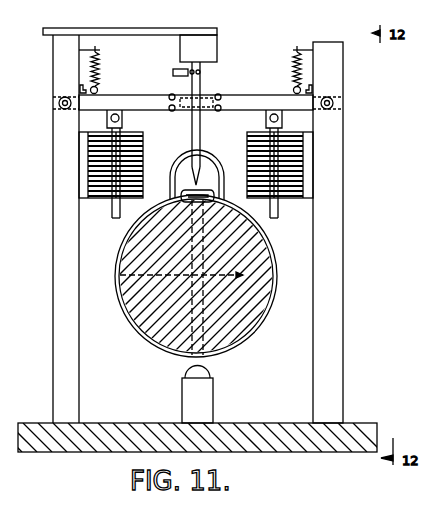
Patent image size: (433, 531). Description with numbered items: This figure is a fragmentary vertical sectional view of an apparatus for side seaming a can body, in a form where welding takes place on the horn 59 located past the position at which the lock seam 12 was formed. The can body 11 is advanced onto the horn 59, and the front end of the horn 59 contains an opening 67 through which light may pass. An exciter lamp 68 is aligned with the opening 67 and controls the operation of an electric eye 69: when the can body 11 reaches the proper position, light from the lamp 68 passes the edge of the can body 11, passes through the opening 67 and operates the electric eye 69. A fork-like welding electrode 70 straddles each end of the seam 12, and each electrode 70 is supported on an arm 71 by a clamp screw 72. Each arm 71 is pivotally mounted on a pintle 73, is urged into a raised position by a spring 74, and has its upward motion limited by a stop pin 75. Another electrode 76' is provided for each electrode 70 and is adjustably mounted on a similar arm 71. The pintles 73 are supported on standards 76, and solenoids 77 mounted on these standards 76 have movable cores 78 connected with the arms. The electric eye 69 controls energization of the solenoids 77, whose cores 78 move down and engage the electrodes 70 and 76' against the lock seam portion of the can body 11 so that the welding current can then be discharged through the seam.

The can body 11 is at (213, 283).
The lock seam 12 is at (208, 190).
The horn 59 is at (233, 338).
The opening 67 is at (205, 303).
The exciter lamp 68 is at (185, 372).
The electric eye 69 is at (209, 50).
The fork-like welding electrode 70 is at (179, 156).
The arm 71 is at (138, 95).
The clamp screw 72 is at (219, 95).
The pintle 73 is at (58, 109).
The spring 74 is at (100, 64).
The stop pin 75 is at (81, 80).
The standard 76 is at (192, 229).
The electrode 76' is at (212, 123).
The solenoid 77 is at (88, 168).
The movable core 78 is at (112, 221).